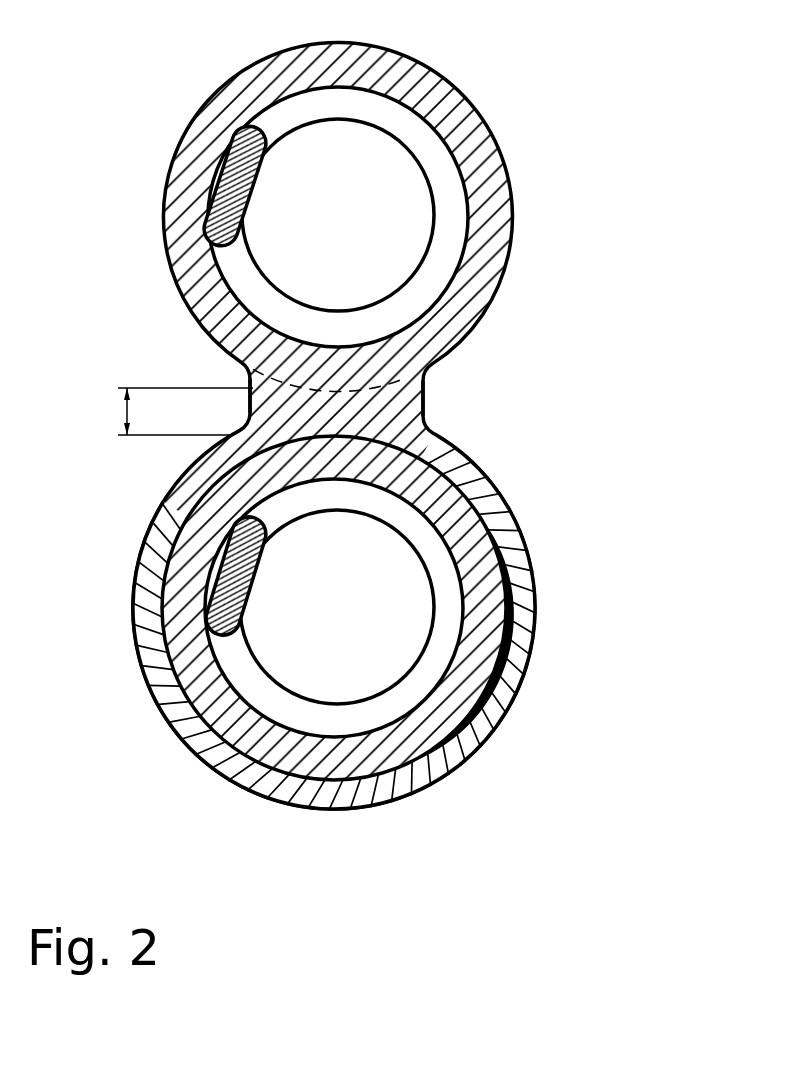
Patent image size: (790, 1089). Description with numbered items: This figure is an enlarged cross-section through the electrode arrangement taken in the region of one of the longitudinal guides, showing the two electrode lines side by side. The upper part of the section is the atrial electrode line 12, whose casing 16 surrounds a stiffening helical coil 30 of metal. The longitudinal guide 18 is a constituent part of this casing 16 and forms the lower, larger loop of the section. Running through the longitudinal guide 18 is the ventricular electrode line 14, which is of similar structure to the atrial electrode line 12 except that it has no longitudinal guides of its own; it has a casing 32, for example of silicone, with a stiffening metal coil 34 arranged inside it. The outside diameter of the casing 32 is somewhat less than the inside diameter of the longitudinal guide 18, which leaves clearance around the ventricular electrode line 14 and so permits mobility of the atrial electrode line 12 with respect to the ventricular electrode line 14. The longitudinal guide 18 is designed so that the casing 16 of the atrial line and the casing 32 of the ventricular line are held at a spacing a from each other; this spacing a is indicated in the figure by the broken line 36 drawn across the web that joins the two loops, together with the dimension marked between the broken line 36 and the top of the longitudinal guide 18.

The atrial electrode line 12 is at (520, 226).
The ventricular electrode line 14 is at (498, 610).
The casing 16 is at (482, 173).
The longitudinal guide 18 is at (520, 672).
The stiffening helical coil 30 is at (435, 280).
The casing 32 is at (447, 538).
The stiffening metal coil 34 is at (388, 506).
The broken line 36 is at (250, 388).
The spacing a is at (170, 410).